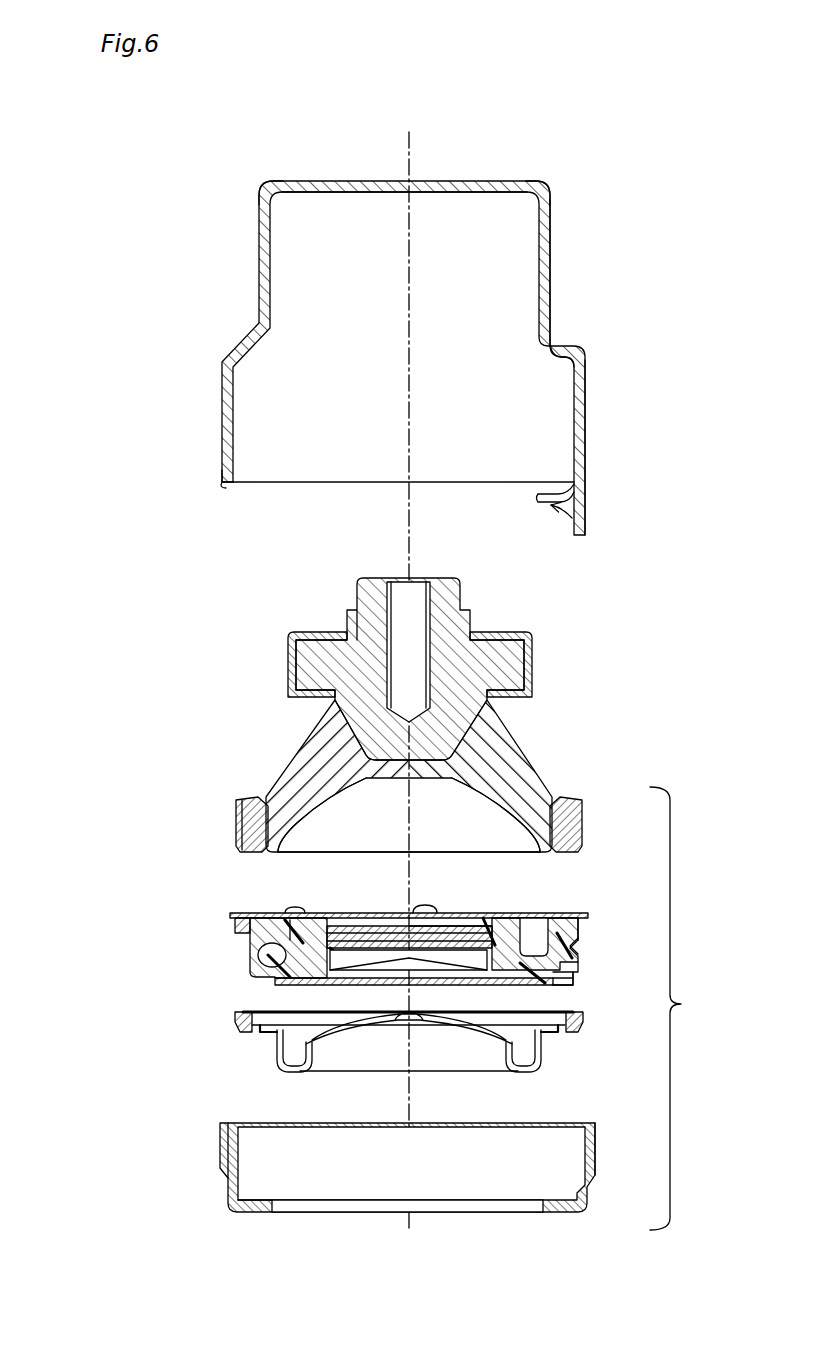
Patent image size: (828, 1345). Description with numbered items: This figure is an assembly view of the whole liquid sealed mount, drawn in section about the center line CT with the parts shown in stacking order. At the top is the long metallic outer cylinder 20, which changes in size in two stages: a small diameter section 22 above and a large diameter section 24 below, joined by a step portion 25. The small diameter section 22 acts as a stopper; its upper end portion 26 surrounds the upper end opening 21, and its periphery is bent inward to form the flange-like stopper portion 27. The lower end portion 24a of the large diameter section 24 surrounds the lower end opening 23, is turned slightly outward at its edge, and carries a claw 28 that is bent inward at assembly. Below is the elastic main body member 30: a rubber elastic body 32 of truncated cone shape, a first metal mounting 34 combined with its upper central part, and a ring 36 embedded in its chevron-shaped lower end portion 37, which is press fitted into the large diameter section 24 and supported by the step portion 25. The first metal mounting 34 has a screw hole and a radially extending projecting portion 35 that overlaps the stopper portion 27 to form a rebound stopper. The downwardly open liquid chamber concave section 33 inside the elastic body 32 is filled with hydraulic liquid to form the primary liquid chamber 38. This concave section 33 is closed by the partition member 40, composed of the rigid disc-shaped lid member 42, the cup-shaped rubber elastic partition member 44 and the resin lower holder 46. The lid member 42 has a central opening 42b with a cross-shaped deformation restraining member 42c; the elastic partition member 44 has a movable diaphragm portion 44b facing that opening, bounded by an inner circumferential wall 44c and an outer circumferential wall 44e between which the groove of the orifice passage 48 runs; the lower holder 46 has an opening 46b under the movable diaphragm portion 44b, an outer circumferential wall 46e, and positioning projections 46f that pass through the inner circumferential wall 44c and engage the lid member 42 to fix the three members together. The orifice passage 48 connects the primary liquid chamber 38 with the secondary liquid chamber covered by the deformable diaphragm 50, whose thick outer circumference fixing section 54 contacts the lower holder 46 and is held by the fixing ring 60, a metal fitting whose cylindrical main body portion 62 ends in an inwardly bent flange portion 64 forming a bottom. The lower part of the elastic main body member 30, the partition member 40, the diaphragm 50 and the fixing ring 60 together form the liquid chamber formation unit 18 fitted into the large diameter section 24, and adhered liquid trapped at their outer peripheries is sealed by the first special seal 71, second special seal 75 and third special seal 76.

The central axis CT is at (408, 670).
The liquid chamber formation unit 18 is at (683, 1008).
The outer cylinder 20 is at (240, 243).
The upper end opening 21 is at (456, 181).
The small diameter section 22 is at (551, 248).
The lower end opening 23 is at (310, 483).
The large diameter section 24 is at (586, 403).
The lower end portion 24a is at (221, 482).
The step portion 25 is at (567, 348).
The upper end portion 26 is at (268, 190).
The stopper portion 27 is at (528, 181).
The claw 28 is at (587, 500).
The elastic main body member 30 is at (417, 698).
The elastic body 32 is at (500, 746).
The liquid chamber concave section 33 is at (340, 797).
The first metal mounting 34 is at (452, 604).
The radially extending projecting portion 35 is at (516, 658).
The ring 36 is at (583, 815).
The lower end portion 37 is at (252, 797).
The primary liquid chamber 38 is at (446, 826).
The partition member 40 is at (369, 937).
The lid member 42 is at (371, 895).
The opening 42b is at (452, 918).
The deformation restraining member 42c is at (362, 913).
The elastic partition member 44 is at (396, 929).
The movable diaphragm portion 44b is at (374, 943).
The inner circumferential wall 44c is at (498, 938).
The outer circumferential wall 44e is at (574, 919).
The lower holder 46 is at (395, 947).
The opening 46b is at (352, 956).
The outer circumferential wall 46e is at (567, 972).
The positioning projection 46f is at (295, 938).
The orifice passage 48 is at (534, 933).
The diaphragm 50 is at (404, 1048).
The thick outer circumference fixing section 54 is at (578, 1033).
The fixing ring 60 is at (408, 1199).
The cylindrical main body portion 62 is at (596, 1132).
The flange portion 64 is at (262, 1213).
The first special seal for adhered liquid 71 is at (237, 922).
The second special seal of adhered liquid 75 is at (582, 1016).
The third special seal for adhered liquid 76 is at (556, 1036).